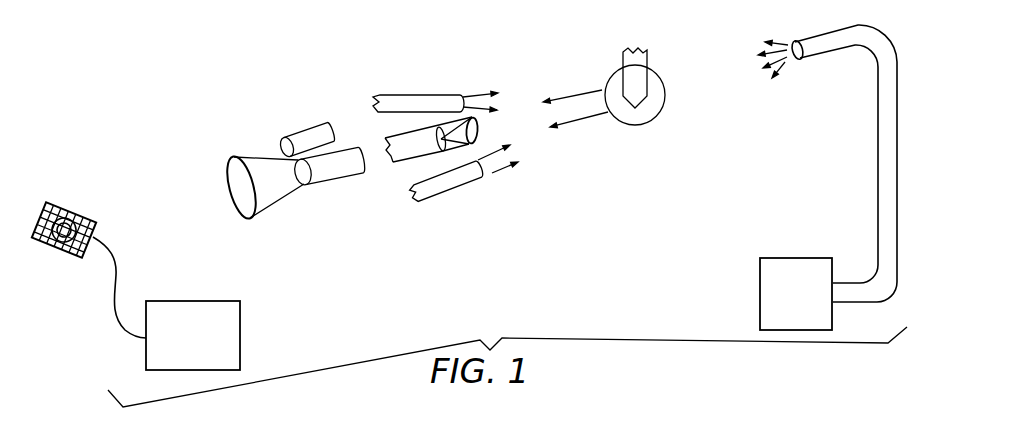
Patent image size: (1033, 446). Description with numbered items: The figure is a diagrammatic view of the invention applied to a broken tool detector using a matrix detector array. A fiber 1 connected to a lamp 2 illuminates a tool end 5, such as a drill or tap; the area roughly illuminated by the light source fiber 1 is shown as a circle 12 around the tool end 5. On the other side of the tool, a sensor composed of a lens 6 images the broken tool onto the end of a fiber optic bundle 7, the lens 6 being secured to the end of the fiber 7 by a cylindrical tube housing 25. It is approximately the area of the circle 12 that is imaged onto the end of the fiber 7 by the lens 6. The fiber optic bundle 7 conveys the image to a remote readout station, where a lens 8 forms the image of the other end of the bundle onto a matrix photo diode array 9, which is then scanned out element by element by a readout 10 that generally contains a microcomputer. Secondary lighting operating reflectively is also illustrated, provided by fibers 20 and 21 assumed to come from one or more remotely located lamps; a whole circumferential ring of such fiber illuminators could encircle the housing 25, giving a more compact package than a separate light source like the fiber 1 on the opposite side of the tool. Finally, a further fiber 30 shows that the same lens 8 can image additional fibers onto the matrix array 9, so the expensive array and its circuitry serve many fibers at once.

The fiber 1 is at (877, 107).
The lamp 2 is at (782, 304).
The tool end 5 is at (648, 56).
The lens 6 is at (478, 130).
The fiber optic bundle 7 is at (343, 170).
The lens 8 is at (233, 154).
The matrix photo diode array 9 is at (93, 219).
The readout 10 is at (203, 361).
The circle 12 is at (664, 107).
The fiber 20 is at (457, 180).
The fiber 21 is at (428, 97).
The cylindrical tube housing 25 is at (476, 144).
The fiber 30 is at (308, 127).